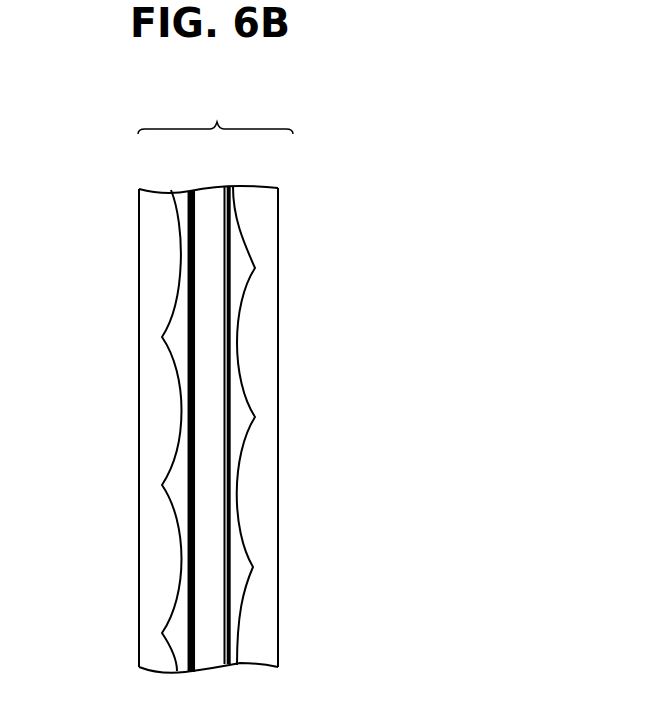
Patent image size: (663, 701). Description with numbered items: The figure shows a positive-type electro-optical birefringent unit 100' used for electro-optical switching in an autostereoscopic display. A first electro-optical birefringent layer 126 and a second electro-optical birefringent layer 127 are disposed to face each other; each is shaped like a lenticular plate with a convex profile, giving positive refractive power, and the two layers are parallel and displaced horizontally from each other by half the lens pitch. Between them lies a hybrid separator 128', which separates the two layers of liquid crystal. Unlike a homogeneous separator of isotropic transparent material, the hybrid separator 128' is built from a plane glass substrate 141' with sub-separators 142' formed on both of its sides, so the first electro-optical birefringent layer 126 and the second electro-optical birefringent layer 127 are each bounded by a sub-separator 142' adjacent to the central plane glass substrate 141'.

The electro-optical birefringent unit 100' is at (276, 380).
The first electro-optical birefringent layer 126 is at (165, 277).
The second electro-optical birefringent layer 127 is at (262, 313).
The hybrid separator 128' is at (215, 112).
The plane glass substrate 141' is at (217, 402).
The sub-separators 142' is at (218, 406).